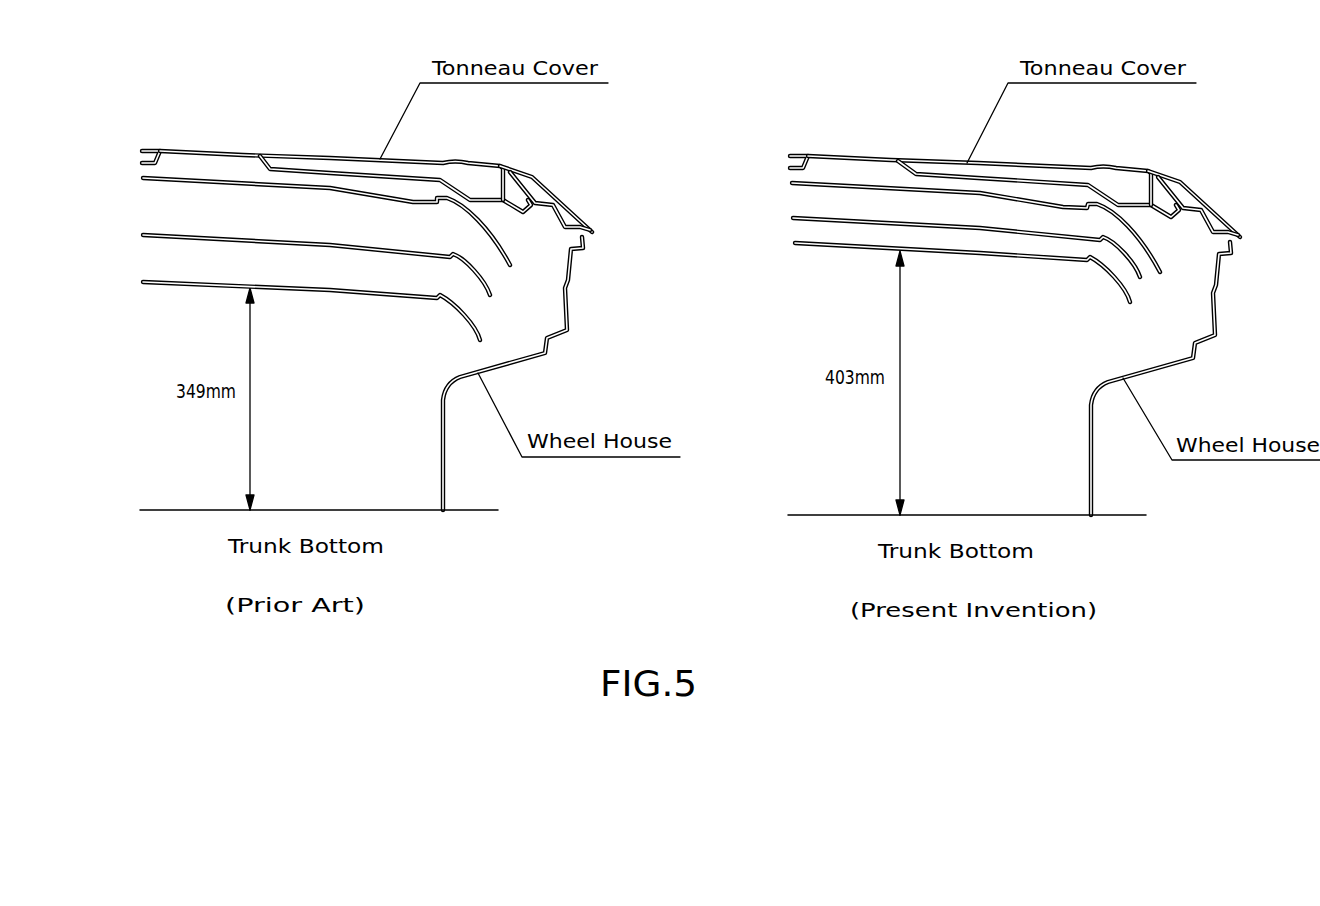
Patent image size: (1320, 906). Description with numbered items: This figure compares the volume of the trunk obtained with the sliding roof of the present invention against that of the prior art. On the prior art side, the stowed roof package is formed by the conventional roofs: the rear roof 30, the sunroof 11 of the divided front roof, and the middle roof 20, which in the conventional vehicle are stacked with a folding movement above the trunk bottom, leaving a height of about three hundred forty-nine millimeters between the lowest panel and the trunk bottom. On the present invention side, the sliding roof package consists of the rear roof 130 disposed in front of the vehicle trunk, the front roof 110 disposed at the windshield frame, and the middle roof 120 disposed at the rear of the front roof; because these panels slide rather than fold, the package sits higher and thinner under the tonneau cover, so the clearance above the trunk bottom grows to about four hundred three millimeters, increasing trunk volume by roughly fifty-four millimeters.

The rear roof 30 is at (143, 178).
The sunroof 11 is at (143, 235).
The middle roof 20 is at (143, 282).
The rear roof 130 is at (792, 183).
The front roof 110 is at (793, 218).
The middle roof 120 is at (795, 243).